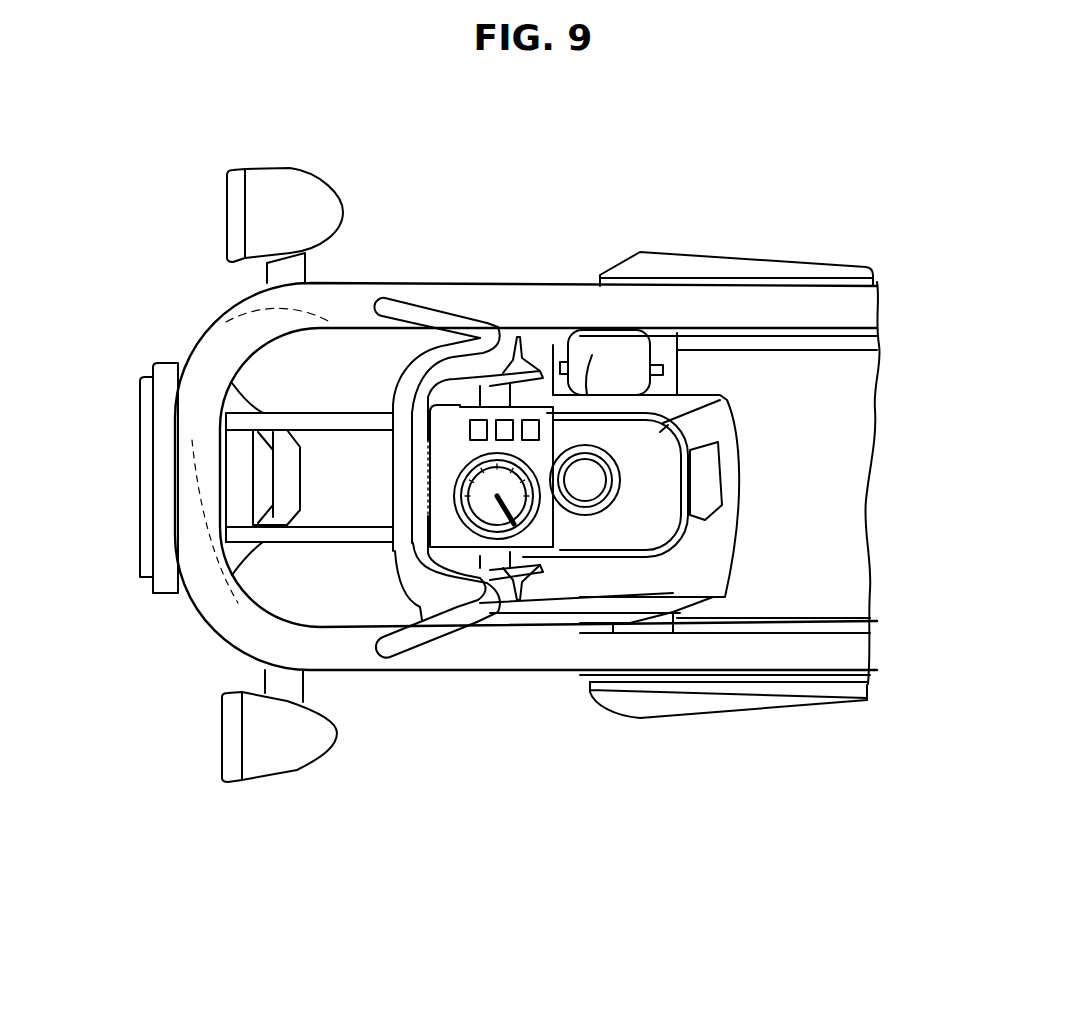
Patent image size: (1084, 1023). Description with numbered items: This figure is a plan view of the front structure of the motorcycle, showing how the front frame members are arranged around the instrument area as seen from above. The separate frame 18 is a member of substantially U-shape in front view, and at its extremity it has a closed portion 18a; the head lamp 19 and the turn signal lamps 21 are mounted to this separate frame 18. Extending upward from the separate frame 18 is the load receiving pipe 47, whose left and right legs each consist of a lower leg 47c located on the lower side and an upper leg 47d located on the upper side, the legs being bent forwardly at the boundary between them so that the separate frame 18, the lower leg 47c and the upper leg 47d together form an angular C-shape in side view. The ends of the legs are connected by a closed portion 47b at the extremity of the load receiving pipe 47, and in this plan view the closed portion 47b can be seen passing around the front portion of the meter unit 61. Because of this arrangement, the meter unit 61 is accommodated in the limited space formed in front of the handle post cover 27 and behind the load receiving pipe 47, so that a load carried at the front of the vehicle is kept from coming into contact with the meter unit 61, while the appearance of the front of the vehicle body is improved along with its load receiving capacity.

The separate frame 18 is at (713, 657).
The closed portion 18a is at (193, 462).
The head lamp 19 is at (165, 586).
The turn signal lamps 21 is at (292, 200).
The handle post cover 27 is at (723, 412).
The load receiving pipe 47 is at (445, 509).
The closed portion 47b is at (410, 487).
The lower leg 47c is at (430, 323).
The upper leg 47d is at (453, 353).
The meter unit 61 is at (518, 487).